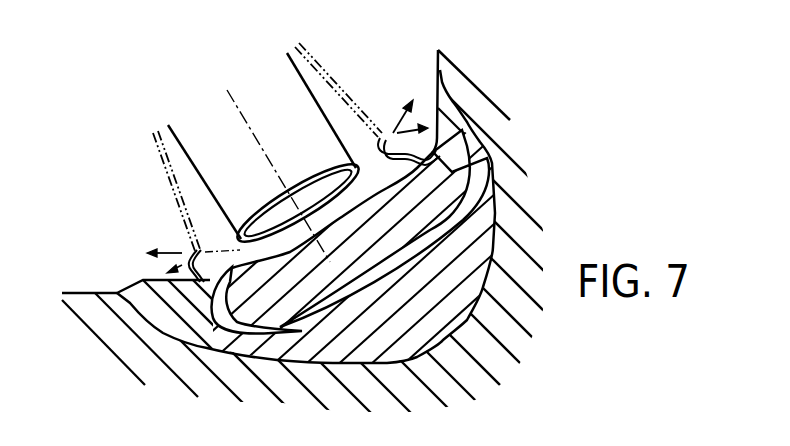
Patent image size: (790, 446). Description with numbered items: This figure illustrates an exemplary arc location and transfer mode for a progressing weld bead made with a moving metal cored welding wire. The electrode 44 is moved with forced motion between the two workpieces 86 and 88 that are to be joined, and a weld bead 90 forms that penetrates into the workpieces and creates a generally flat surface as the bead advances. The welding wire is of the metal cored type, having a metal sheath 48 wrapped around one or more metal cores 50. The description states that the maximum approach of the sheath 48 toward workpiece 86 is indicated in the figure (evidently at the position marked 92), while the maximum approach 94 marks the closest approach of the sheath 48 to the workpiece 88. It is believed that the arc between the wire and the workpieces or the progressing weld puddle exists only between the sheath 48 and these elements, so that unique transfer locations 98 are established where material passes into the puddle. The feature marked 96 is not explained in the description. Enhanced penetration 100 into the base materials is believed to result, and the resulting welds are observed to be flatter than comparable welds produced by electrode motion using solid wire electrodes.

The electrode 44 is at (228, 144).
The sheath 48 is at (337, 84).
The metal core 50 is at (276, 214).
The workpiece 86 is at (507, 167).
The workpiece 88 is at (142, 358).
The weld bead 90 is at (488, 225).
The flow direction arrows 92 is at (388, 118).
The maximum approach of the sheath 94 is at (181, 243).
The flow of material 96 is at (393, 157).
The transfer locations 98 is at (163, 270).
The enhanced penetration 100 is at (434, 329).